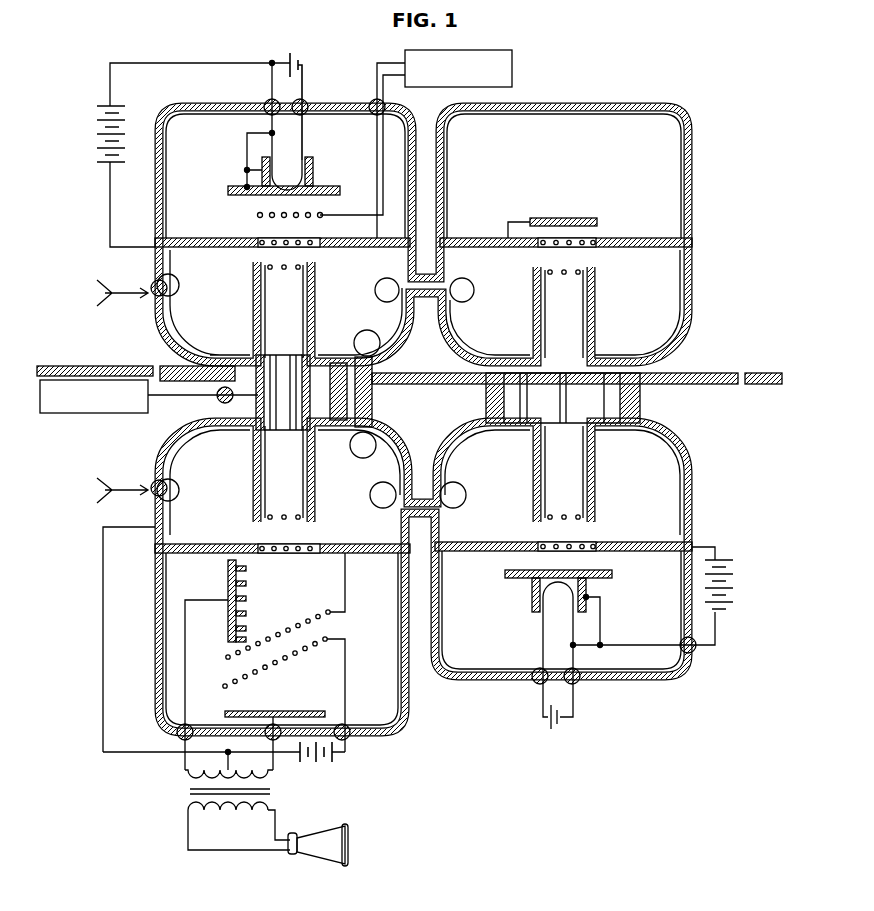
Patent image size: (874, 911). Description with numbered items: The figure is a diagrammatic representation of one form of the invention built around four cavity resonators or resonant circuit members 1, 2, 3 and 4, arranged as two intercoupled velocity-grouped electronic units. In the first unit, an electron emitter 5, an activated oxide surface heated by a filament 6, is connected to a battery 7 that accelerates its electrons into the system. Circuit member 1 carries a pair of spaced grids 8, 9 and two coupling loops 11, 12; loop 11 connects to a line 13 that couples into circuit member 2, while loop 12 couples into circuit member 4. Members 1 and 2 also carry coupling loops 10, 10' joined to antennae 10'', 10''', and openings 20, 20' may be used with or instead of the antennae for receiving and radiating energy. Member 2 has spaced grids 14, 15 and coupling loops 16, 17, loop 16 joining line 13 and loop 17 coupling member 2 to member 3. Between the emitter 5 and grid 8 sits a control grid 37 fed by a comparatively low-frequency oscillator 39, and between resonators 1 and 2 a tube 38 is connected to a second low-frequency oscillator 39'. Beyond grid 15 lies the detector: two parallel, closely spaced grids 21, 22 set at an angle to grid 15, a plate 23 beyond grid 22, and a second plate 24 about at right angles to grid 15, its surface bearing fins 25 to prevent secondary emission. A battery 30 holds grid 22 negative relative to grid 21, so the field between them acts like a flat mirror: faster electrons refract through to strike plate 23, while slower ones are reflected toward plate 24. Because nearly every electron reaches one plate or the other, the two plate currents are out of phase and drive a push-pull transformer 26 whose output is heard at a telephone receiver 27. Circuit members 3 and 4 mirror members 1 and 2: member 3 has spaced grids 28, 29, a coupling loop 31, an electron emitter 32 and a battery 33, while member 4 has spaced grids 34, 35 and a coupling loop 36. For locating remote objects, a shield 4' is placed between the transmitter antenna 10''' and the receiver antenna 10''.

The resonant circuit member 1 is at (156, 264).
The resonant circuit member 2 is at (155, 455).
The resonant circuit member 3 is at (692, 468).
The resonant circuit member 4 is at (572, 234).
The shield 4' is at (409, 383).
The electron emitter 5 is at (305, 193).
The filament 6 is at (302, 76).
The battery 7 is at (104, 120).
The grid 8 is at (262, 240).
The grid 9 is at (260, 263).
The coupling loop 10 is at (171, 274).
The coupling loop 10' is at (174, 499).
The antenna 10'' is at (115, 281).
The antenna 10''' is at (114, 475).
The coupling loop 11 is at (354, 343).
The coupling loop 12 is at (387, 278).
The line 13 is at (372, 398).
The grid 14 is at (311, 522).
The grid 15 is at (262, 522).
The coupling loop 16 is at (350, 446).
The coupling loop 17 is at (371, 500).
The opening 20 is at (423, 231).
The opening 20' is at (282, 555).
The grid 21 is at (306, 624).
The grid 22 is at (302, 658).
The plate 23 is at (290, 712).
The plate 24 is at (228, 612).
The fins 25 is at (237, 562).
The push-pull transformer 26 is at (190, 789).
The receiver 27 is at (342, 832).
The grid 28 is at (545, 545).
The grid 29 is at (578, 522).
The battery 30 is at (330, 764).
The coupling loop 31 is at (465, 500).
The electron emitter 32 is at (532, 578).
The battery 33 is at (732, 578).
The grid 34 is at (545, 267).
The grid 35 is at (590, 225).
The coupling loop 36 is at (466, 278).
The control grid 37 is at (260, 216).
The tube 38 is at (308, 378).
The oscillator 39 is at (431, 144).
The oscillator 39' is at (149, 408).